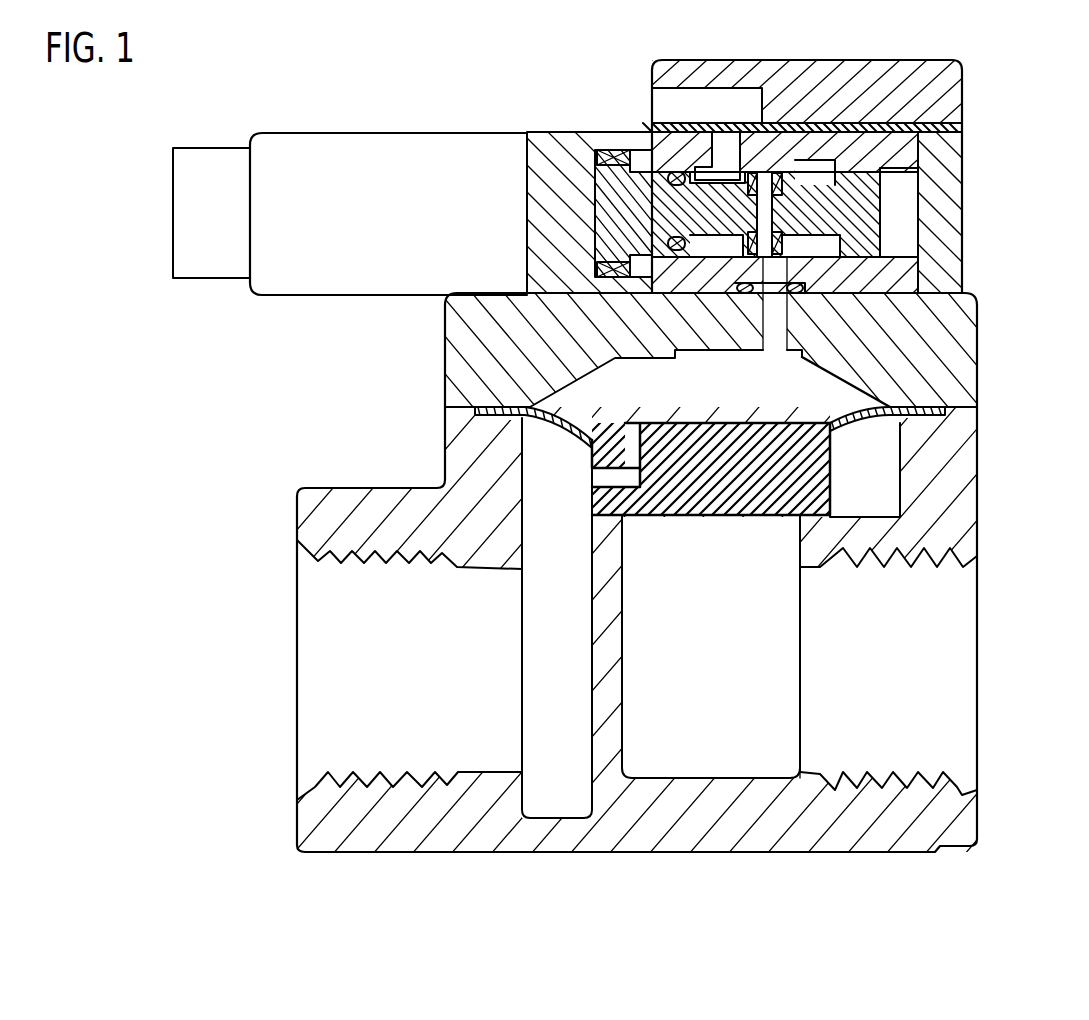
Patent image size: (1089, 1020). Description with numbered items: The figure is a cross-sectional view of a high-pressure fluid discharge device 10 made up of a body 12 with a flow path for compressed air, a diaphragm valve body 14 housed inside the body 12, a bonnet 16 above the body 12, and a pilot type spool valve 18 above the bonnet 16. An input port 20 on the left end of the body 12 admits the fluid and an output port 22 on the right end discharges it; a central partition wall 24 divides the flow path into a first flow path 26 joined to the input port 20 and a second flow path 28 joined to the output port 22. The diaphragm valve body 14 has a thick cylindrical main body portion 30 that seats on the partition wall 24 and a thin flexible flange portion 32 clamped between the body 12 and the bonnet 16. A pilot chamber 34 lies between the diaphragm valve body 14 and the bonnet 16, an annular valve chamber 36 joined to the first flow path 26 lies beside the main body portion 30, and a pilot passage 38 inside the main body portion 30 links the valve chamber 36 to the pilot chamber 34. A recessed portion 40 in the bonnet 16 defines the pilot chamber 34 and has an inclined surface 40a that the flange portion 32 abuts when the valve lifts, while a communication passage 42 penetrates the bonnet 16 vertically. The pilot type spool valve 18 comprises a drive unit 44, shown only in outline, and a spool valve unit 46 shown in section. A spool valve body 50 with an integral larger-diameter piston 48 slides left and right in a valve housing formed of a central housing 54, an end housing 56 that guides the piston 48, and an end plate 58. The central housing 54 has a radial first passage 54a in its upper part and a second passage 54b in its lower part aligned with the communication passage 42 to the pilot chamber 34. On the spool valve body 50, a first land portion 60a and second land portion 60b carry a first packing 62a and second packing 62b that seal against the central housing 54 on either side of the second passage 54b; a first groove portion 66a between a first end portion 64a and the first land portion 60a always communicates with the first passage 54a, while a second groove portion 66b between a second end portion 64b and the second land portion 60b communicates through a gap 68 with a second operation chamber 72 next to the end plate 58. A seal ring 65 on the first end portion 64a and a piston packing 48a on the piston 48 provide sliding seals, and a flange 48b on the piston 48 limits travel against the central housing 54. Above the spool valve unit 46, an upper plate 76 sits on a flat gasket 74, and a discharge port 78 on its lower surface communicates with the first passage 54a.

The high-pressure fluid discharge device 10 is at (220, 76).
The body 12 is at (340, 818).
The diaphragm valve body 14 is at (723, 527).
The bonnet 16 is at (462, 330).
The pilot type spool valve 18 is at (549, 119).
The input port 20 is at (325, 612).
The output port 22 is at (958, 607).
The partition wall 24 is at (600, 625).
The first flow path 26 is at (555, 688).
The second flow path 28 is at (780, 730).
The main body portion 30 is at (670, 505).
The flange portion 32 is at (558, 432).
The pilot chamber 34 is at (592, 390).
The valve chamber 36 is at (878, 470).
The pilot passage 38 is at (597, 487).
The recessed portion 40 is at (807, 358).
The inclined surface 40a is at (852, 378).
The communication passage 42 is at (773, 337).
The drive unit 44 is at (309, 130).
The spool valve unit 46 is at (904, 306).
The piston 48 is at (598, 245).
The piston packing 48a is at (605, 262).
The flange 48b is at (648, 148).
The spool valve body 50 is at (812, 185).
The central housing 54 is at (905, 148).
The first passage 54a is at (722, 150).
The second passage 54b is at (772, 300).
The end housing 56 is at (560, 163).
The end plate 58 is at (938, 182).
The first land portion 60a is at (738, 178).
The second land portion 60b is at (793, 170).
The first packing 62a is at (640, 233).
The second packing 62b is at (900, 236).
The first end portion 64a is at (660, 200).
The second end portion 64b is at (865, 216).
The seal ring 65 is at (668, 325).
The first groove portion 66a is at (703, 250).
The second groove portion 66b is at (830, 172).
The gap 68 is at (917, 275).
The second operation chamber 72 is at (903, 192).
The flat gasket 74 is at (925, 128).
The upper plate 76 is at (955, 92).
The discharge port 78 is at (657, 103).